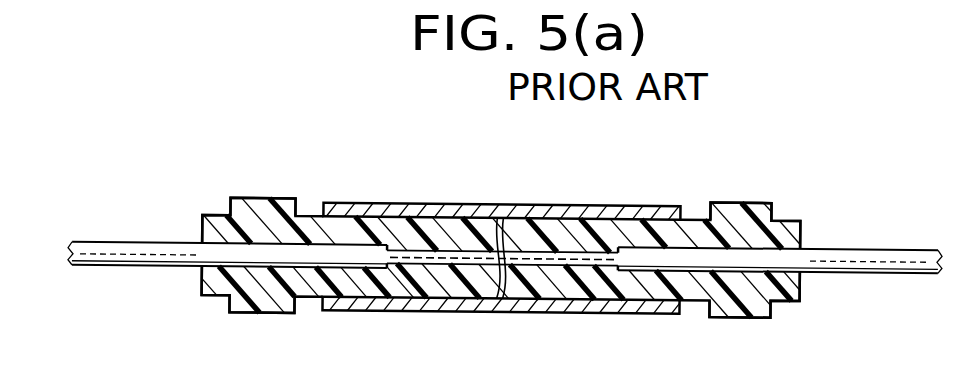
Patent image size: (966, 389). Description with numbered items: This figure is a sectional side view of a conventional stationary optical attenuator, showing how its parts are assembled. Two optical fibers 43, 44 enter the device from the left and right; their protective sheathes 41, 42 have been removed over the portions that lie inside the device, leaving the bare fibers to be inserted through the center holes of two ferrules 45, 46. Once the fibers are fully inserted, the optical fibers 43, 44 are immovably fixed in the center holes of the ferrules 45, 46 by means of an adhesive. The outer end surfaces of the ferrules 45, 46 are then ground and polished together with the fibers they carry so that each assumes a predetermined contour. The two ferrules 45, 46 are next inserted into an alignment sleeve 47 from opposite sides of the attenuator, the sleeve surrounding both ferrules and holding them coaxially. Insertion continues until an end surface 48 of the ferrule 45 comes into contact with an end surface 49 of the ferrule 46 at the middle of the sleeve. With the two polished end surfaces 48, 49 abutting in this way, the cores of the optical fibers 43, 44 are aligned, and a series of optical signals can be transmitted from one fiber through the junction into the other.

The sheath 41 is at (137, 248).
The sheath 42 is at (868, 262).
The optical fiber 43 is at (418, 254).
The optical fiber 44 is at (596, 252).
The ferrule 45 is at (260, 200).
The ferrule 46 is at (732, 207).
The alignment sleeve 47 is at (552, 305).
The end surface 48 is at (503, 250).
The end surface 49 is at (502, 305).